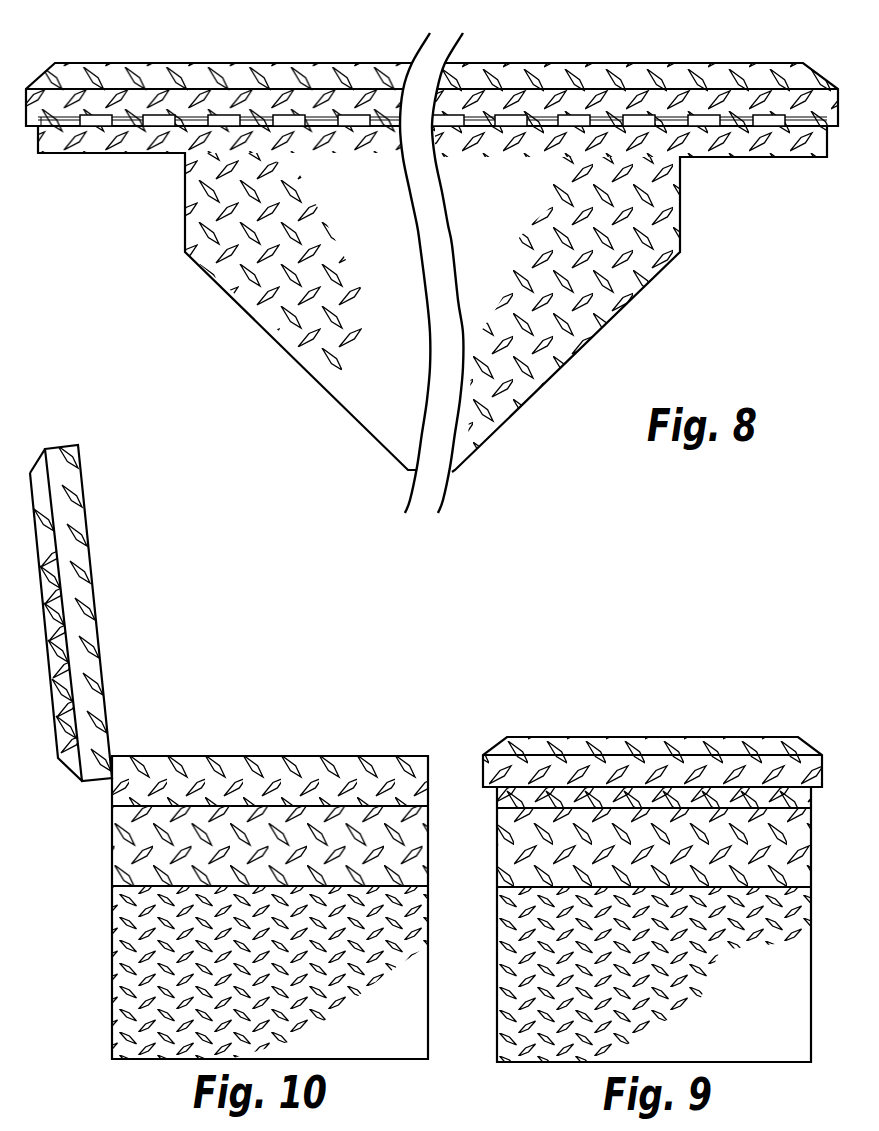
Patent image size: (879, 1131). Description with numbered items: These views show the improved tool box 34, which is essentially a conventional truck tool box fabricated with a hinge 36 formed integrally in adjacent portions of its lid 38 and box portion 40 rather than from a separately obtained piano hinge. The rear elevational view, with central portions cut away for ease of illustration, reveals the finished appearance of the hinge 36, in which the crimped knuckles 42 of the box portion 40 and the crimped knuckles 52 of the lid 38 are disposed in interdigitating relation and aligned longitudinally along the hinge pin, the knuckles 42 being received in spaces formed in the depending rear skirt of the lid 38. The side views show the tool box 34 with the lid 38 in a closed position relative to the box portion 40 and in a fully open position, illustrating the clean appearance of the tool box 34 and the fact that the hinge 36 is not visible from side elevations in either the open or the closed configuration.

In FIG. 9, the tool box 34 is at (667, 845).
In FIG. 10, the tool box 34 is at (227, 752).
In FIG. 8, the hinge 36 is at (432, 132).
In FIG. 8, the lid 38 is at (333, 63).
In FIG. 9, the lid 38 is at (602, 737).
In FIG. 10, the lid 38 is at (50, 742).
In FIG. 8, the box portion 40 is at (212, 277).
In FIG. 9, the box portion 40 is at (812, 833).
In FIG. 10, the box portion 40 is at (112, 843).
In FIG. 8, the crimped knuckles 42 is at (448, 128).
In FIG. 8, the crimped knuckles 52 is at (318, 120).